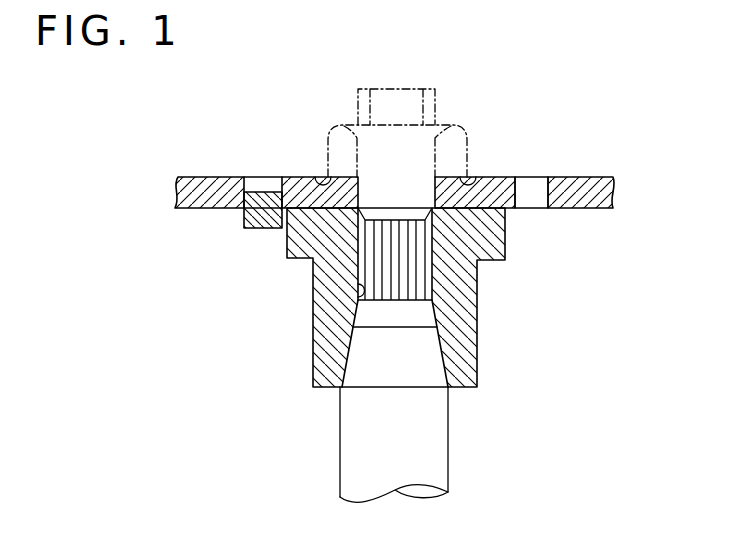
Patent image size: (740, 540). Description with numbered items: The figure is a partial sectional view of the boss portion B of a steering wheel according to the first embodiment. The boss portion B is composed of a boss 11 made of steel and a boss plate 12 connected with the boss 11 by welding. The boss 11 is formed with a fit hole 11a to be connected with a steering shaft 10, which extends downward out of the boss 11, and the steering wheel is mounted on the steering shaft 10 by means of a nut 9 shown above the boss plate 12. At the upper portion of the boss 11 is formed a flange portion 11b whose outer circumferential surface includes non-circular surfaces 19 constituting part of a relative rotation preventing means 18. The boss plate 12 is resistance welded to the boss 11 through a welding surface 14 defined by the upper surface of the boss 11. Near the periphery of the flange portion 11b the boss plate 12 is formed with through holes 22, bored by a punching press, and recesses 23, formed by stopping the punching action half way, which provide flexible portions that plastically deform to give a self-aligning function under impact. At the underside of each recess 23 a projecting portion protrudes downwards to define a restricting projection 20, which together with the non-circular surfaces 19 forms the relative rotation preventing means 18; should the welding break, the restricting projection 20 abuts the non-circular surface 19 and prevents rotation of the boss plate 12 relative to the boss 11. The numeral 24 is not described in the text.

The nut 9 is at (333, 126).
The steering shaft 10 is at (348, 432).
The boss 11 is at (472, 325).
The fit hole 11a is at (358, 297).
The flange portion 11b is at (490, 248).
The boss plate 12 is at (592, 184).
The welding surface 14 is at (490, 205).
The relative rotation preventing means 18 is at (186, 232).
The non-circular surface 19 is at (290, 247).
The restricting projection 20 is at (244, 222).
The through hole 22 is at (537, 185).
The recess 23 is at (261, 182).
The lip 24 is at (233, 190).
The boss portion B is at (500, 392).